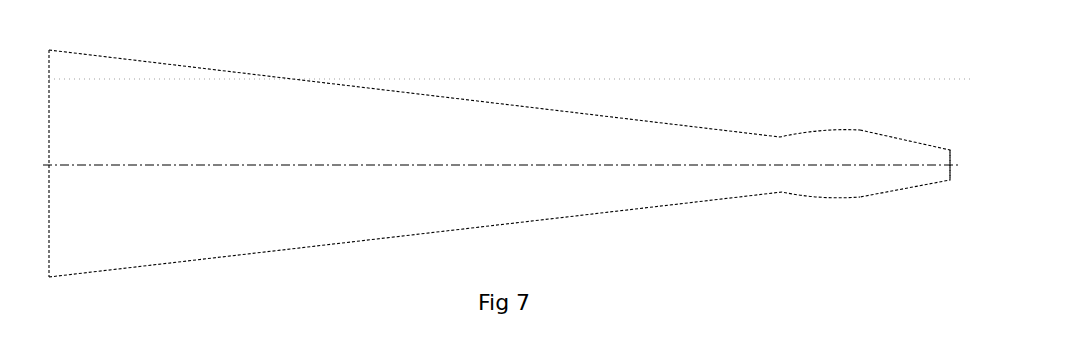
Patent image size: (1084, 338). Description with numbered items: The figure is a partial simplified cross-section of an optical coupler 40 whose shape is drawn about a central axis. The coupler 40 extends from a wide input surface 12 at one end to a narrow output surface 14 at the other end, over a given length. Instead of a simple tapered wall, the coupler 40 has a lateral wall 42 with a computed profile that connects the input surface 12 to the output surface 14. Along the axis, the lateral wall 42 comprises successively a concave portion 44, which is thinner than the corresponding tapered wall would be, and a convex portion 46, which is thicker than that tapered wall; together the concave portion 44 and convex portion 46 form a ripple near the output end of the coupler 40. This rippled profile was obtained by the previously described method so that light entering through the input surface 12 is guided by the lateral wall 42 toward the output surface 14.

The optical coupler 40 is at (499, 145).
The input surface 12 is at (49, 113).
The output surface 14 is at (950, 159).
The lateral wall 42 is at (442, 99).
The concave portion 44 is at (787, 193).
The convex portion 46 is at (858, 198).